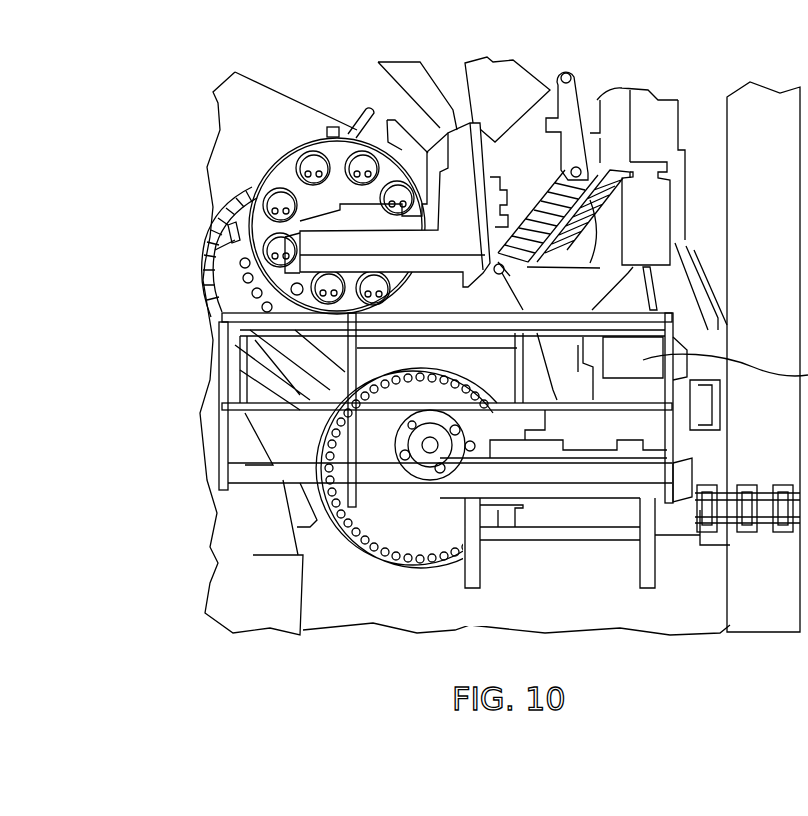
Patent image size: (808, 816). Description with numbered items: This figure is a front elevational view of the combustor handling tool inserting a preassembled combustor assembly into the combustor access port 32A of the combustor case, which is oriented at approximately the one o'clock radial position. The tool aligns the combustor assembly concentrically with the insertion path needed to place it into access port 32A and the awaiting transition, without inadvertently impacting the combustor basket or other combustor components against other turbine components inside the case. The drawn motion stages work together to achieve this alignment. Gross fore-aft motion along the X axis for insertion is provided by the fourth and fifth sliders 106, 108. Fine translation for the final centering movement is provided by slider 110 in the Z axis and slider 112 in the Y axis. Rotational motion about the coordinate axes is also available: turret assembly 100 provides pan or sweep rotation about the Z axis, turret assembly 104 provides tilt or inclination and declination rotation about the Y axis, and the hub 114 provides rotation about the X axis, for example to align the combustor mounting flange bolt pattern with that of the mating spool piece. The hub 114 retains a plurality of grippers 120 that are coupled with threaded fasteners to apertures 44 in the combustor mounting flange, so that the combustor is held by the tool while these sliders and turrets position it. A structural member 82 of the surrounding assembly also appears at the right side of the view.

The frame panel 82 is at (764, 114).
The turret assembly 100 is at (700, 262).
The turret assembly 104 is at (613, 100).
The fourth slider 106 is at (550, 73).
The fifth slider 108 is at (493, 135).
The slider 110 is at (457, 135).
The slider 112 is at (323, 130).
The hub 114 is at (390, 167).
The grippers 120 is at (237, 248).
The apertures 44 is at (245, 362).
The combustor access port 32A is at (335, 388).